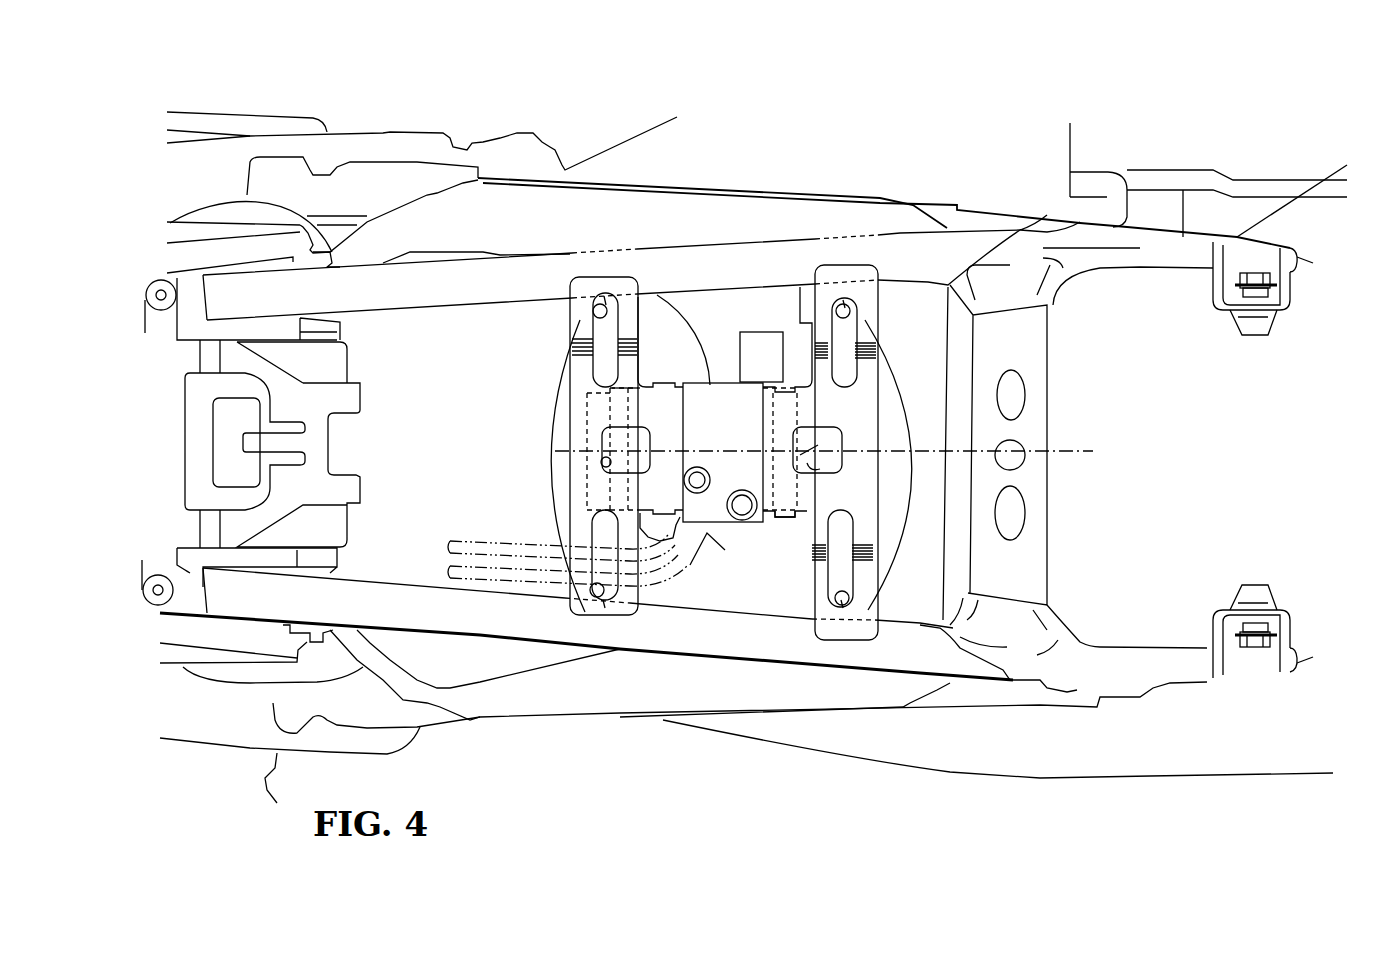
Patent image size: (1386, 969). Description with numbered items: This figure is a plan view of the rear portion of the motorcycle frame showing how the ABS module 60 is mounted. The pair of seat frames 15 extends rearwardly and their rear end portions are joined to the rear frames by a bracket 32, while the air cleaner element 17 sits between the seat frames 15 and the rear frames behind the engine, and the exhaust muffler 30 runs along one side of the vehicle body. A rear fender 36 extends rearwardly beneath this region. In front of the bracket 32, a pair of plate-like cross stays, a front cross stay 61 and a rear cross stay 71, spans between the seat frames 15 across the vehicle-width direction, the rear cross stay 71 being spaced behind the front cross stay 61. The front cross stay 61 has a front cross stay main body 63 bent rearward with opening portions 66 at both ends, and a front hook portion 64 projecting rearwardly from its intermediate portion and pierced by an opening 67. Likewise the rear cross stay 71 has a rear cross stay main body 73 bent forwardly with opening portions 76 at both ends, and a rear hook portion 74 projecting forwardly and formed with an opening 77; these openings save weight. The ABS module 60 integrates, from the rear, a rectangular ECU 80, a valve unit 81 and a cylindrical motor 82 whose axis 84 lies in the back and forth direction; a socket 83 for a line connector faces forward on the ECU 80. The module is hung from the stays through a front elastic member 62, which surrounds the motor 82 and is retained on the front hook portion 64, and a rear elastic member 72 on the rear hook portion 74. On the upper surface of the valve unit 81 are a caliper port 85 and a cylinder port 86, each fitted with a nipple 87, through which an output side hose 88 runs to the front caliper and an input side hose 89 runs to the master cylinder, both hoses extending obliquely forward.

The seat frame 15 is at (757, 258).
The air cleaner element 17 is at (456, 466).
The exhaust muffler 30 is at (905, 135).
The bracket 32 is at (1033, 360).
The rear fender 36 is at (707, 600).
The ABS module 60 is at (730, 400).
The front cross stay 61 is at (613, 425).
The front elastic member 62 is at (636, 465).
The front cross stay main body 63 is at (627, 290).
The front hook portion 64 is at (645, 398).
The opening portion 66 is at (600, 290).
The opening 67 is at (603, 463).
The rear cross stay 71 is at (867, 425).
The rear elastic member 72 is at (783, 523).
The rear cross stay main body 73 is at (833, 277).
The rear hook portion 74 is at (787, 420).
The opening portion 76 is at (855, 275).
The opening 77 is at (820, 468).
The ECU 80 is at (820, 443).
The valve unit 81 is at (727, 438).
The motor 82 is at (587, 437).
The socket 83 is at (737, 290).
The axis 84 is at (573, 450).
The caliper port 85 is at (715, 555).
The cylinder port 86 is at (707, 482).
The nipple 87 is at (693, 468).
The output side hose 88 is at (495, 590).
The input side hose 89 is at (465, 540).